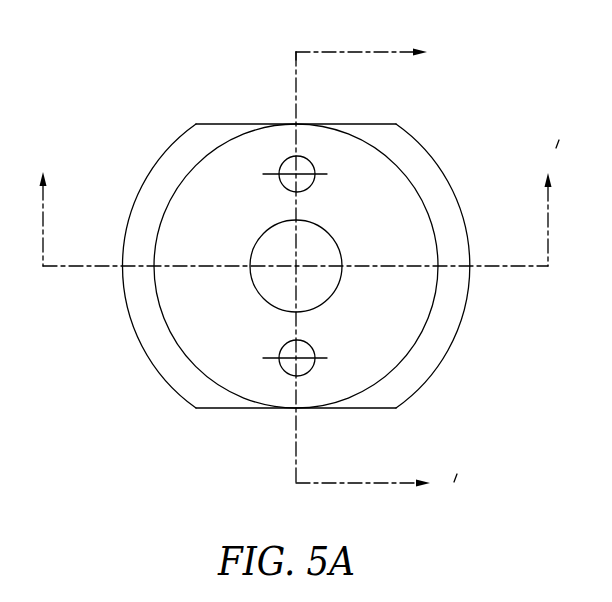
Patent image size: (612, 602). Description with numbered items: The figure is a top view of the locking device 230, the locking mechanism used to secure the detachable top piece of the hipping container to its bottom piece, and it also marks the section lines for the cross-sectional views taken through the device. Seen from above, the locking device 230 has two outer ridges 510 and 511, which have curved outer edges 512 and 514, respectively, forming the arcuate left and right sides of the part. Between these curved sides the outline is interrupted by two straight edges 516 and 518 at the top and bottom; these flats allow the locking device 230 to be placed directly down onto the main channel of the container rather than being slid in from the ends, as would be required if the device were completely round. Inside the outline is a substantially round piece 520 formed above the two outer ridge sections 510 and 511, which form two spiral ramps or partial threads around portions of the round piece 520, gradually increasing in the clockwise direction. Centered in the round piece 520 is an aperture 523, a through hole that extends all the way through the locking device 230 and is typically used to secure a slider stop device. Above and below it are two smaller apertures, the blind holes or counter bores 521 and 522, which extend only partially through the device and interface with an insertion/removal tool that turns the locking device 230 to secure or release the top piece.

The locking device 230 is at (510, 90).
The outer ridge 510 is at (443, 343).
The outer ridge 511 is at (148, 342).
The curved outer edge 512 is at (453, 192).
The curved outer edge 514 is at (168, 386).
The straight edge 516 is at (373, 410).
The straight edge 518 is at (218, 123).
The round piece 520 is at (347, 150).
The blind hole 521 is at (279, 184).
The blind hole 522 is at (312, 346).
The aperture 523 is at (332, 238).